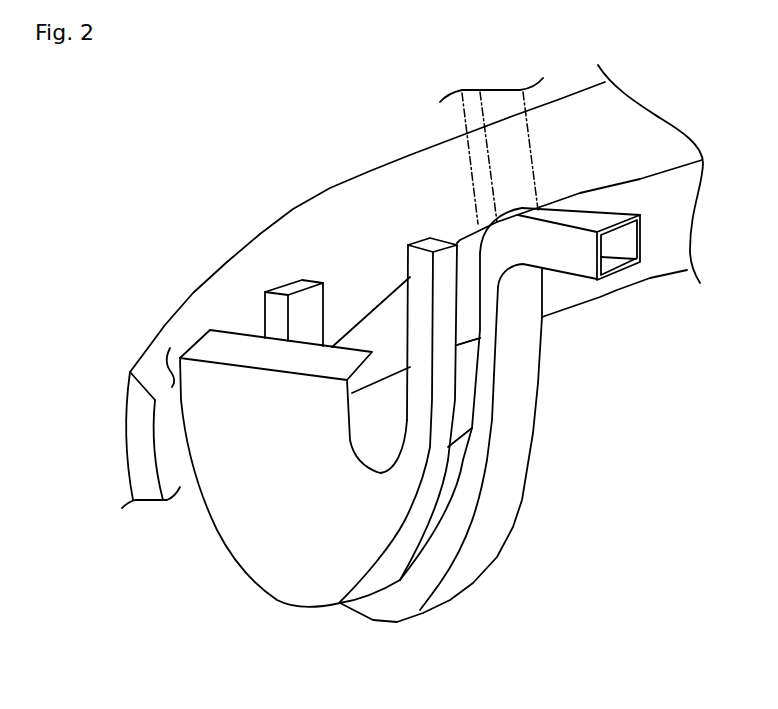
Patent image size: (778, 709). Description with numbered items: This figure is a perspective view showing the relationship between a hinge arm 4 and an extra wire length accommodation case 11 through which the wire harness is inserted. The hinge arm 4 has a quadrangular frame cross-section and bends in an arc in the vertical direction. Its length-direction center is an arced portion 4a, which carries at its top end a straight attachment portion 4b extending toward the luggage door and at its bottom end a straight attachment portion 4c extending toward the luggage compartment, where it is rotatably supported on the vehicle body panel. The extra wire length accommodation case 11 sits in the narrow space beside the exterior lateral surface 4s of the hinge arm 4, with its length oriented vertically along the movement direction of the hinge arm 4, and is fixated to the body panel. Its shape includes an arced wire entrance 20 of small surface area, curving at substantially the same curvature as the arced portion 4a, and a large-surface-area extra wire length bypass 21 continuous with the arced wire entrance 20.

The arced wire entrance 20 is at (423, 338).
The hinge arm 4 is at (406, 447).
The arced portion 4a is at (428, 575).
The attachment portion 4b is at (577, 255).
The attachment portion 4c is at (277, 316).
The exterior lateral surface 4s is at (457, 520).
The extra wire length accommodation case 11 is at (281, 499).
The extra wire length bypass 21 is at (250, 510).